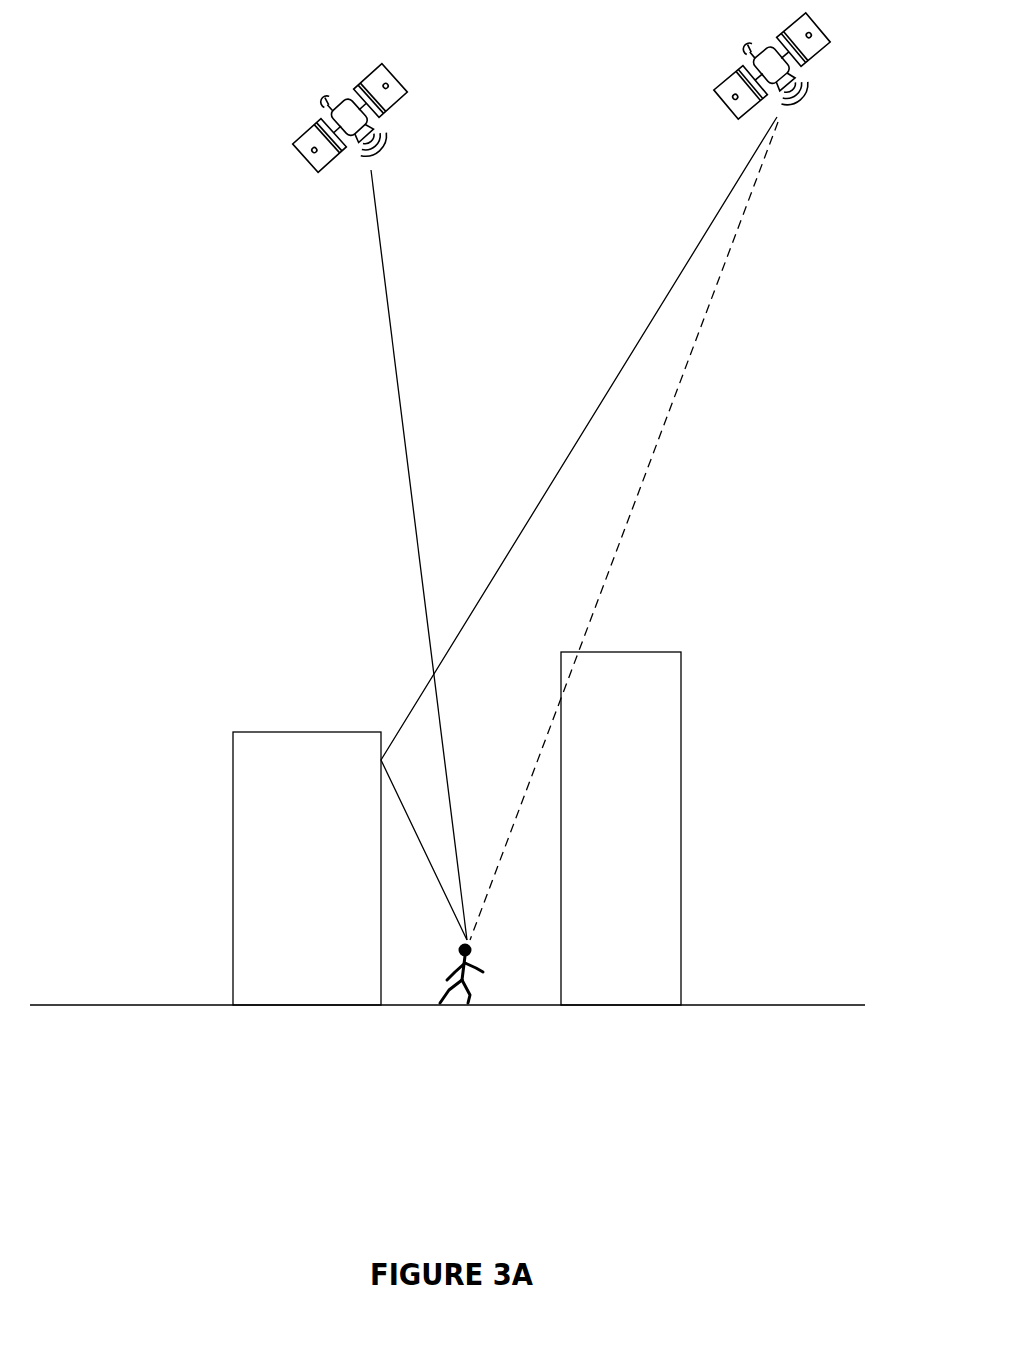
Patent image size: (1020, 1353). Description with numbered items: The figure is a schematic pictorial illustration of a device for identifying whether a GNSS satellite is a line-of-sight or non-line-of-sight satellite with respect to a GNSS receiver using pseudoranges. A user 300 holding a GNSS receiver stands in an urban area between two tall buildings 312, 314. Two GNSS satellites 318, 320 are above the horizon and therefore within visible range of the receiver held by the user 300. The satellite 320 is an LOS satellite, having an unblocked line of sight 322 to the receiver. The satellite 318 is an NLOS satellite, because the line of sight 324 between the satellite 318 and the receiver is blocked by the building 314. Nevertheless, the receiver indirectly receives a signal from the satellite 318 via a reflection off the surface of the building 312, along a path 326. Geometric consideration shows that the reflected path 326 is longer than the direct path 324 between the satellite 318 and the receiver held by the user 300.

The user 300 is at (443, 973).
The building 312 is at (247, 775).
The building 314 is at (660, 748).
The GNSS satellite 318 is at (728, 72).
The GNSS satellite 320 is at (305, 135).
The line of sight 322 is at (388, 322).
The line of sight 324 is at (670, 418).
The path 326 is at (614, 367).